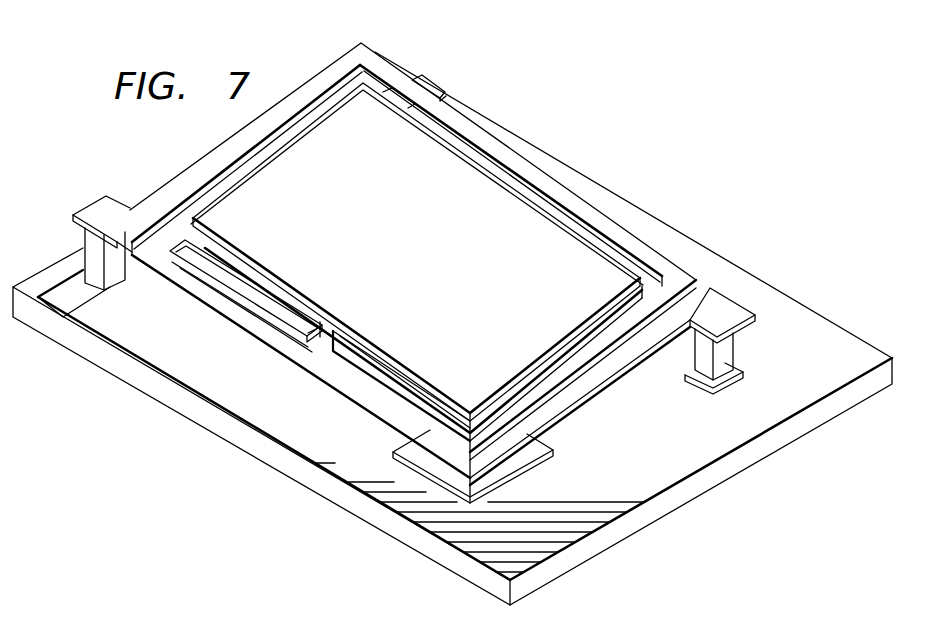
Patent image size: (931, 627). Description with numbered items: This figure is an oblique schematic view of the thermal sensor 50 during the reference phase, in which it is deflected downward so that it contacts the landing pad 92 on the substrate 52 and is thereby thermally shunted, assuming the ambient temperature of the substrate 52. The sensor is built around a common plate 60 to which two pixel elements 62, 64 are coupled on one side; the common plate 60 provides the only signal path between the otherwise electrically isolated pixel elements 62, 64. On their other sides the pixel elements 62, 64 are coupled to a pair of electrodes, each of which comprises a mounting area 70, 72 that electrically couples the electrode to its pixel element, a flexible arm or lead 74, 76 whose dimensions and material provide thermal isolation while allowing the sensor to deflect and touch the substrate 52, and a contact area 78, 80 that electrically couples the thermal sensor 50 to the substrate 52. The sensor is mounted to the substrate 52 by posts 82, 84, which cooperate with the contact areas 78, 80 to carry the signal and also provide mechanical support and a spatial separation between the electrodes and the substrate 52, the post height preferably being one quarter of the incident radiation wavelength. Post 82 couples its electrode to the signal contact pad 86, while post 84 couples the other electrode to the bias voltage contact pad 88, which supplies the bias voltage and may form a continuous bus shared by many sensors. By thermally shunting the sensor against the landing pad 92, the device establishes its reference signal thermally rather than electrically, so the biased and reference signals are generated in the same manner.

The thermal sensor 50 is at (565, 180).
The substrate 52 is at (735, 463).
The common plate 60 is at (457, 153).
The pixel element 62 is at (393, 382).
The pixel element 64 is at (248, 275).
The mounting area 70 is at (337, 360).
The mounting area 72 is at (292, 322).
The flexible lead 74 is at (600, 383).
The flexible lead 76 is at (638, 242).
The contact area 78 is at (730, 305).
The contact area 80 is at (95, 208).
The post 82 is at (728, 352).
The post 84 is at (115, 268).
The signal contact pad 86 is at (730, 378).
The bias voltage contact pad 88 is at (428, 87).
The landing pad 92 is at (522, 470).